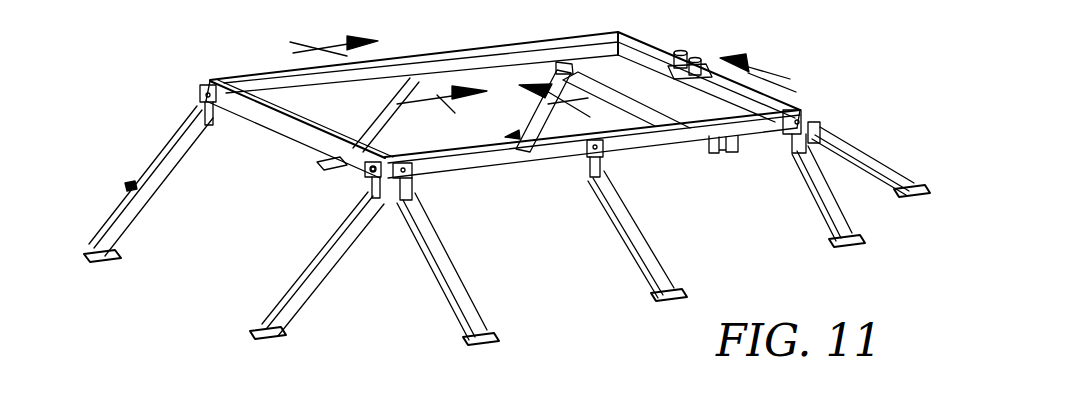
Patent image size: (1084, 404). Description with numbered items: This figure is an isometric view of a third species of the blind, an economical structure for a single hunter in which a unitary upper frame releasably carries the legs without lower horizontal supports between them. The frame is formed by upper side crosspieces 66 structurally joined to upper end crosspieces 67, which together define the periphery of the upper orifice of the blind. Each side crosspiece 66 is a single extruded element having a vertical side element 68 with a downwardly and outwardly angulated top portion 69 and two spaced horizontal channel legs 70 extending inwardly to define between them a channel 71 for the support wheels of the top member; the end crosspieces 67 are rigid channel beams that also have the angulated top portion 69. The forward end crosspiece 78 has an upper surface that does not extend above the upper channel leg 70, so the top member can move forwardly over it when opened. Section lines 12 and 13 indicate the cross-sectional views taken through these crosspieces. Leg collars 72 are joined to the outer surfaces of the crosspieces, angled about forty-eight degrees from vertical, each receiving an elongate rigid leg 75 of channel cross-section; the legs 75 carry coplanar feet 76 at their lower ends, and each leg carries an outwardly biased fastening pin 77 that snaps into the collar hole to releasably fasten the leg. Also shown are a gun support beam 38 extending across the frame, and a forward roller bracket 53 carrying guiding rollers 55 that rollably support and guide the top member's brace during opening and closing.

The section line 12- 12 is at (388, 79).
The section line 13- 13 is at (659, 90).
The gun support beam 38 is at (627, 108).
The forward roller bracket 53 is at (668, 60).
The guiding rollers 55 is at (677, 50).
The upper side crosspiece 66 is at (547, 27).
The upper end crosspiece 67 is at (657, 30).
The vertical side element 68 is at (308, 138).
The angulated top portion 69 is at (290, 120).
The horizontal channel leg 70 is at (281, 91).
The channel 71 is at (451, 67).
The leg collar 72 is at (206, 96).
The leg 75 is at (447, 273).
The feet 76 is at (133, 184).
The fastening pin 77 is at (366, 178).
The forward end crosspiece 78 is at (775, 100).